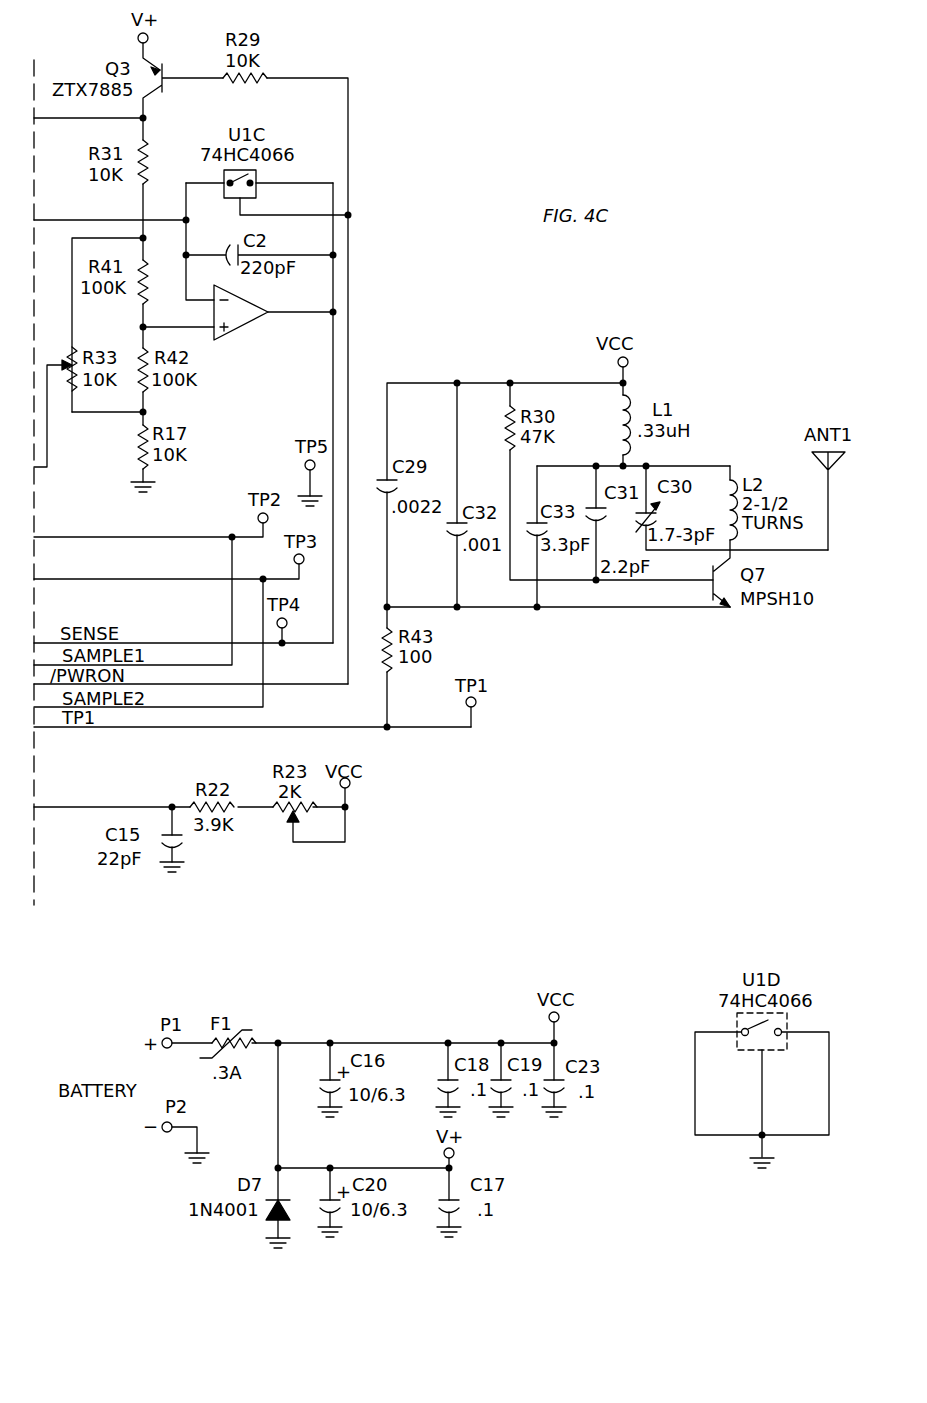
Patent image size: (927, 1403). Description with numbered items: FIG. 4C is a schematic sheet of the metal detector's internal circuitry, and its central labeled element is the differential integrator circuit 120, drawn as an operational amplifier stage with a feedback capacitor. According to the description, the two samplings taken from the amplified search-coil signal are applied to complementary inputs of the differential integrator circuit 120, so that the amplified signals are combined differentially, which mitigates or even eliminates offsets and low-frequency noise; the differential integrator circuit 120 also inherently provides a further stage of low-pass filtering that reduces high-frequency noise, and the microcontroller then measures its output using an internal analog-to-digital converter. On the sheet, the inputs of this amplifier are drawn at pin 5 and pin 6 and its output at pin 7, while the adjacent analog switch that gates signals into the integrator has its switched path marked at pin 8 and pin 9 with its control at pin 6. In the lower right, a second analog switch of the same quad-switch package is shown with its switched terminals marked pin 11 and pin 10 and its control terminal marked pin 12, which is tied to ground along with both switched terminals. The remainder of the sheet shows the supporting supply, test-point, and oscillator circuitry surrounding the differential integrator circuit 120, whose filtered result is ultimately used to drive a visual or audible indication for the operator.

The differential integrator circuit 120 is at (248, 298).
The op-amp non-inverting input pin 5 is at (178, 320).
The analog switch control pin 6 is at (287, 210).
The op-amp output pin 7 is at (300, 301).
The analog switch pin 8 is at (205, 179).
The analog switch pin 9 is at (294, 179).
The analog switch pin 10 is at (795, 1072).
The analog switch pin 11 is at (728, 1072).
The analog switch control pin 12 is at (770, 1109).